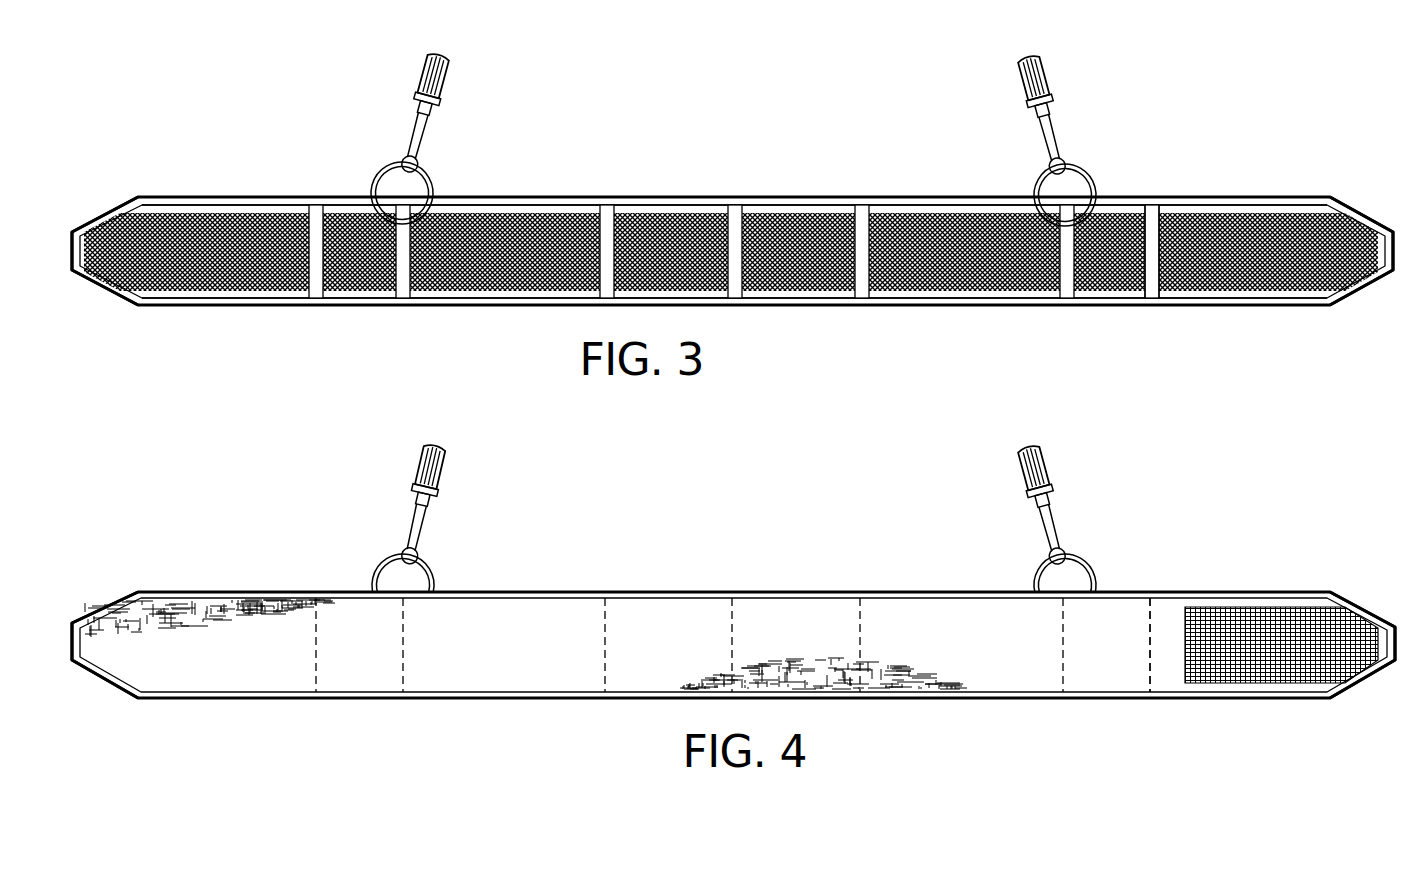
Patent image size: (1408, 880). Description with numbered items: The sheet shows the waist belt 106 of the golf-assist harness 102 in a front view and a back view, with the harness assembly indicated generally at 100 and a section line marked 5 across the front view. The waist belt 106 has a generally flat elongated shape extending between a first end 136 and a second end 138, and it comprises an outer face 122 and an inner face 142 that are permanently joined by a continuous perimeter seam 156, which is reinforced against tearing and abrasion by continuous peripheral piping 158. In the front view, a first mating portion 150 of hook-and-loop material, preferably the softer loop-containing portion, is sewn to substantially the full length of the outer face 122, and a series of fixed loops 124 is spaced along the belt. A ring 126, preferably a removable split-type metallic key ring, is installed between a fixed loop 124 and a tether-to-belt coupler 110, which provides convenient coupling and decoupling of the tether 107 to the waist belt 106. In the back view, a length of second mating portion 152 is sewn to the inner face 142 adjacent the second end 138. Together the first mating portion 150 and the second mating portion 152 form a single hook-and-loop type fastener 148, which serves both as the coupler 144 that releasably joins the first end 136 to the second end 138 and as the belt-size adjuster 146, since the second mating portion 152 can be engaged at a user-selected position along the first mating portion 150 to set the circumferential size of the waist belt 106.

In FIG. 3, the belt assembly 100 is at (300, 132).
In FIG. 4, the belt assembly 100 is at (310, 495).
In FIG. 3, the golf-assist harness 102 is at (212, 137).
In FIG. 4, the golf-assist harness 102 is at (215, 500).
In FIG. 3, the waist belt 106 is at (182, 190).
In FIG. 4, the waist belt 106 is at (250, 592).
In FIG. 3, the tether 107 is at (460, 104).
In FIG. 4, the tether 107 is at (455, 512).
In FIG. 3, the tether-to-belt coupler 110 is at (398, 140).
In FIG. 4, the tether-to-belt coupler 110 is at (412, 532).
In FIG. 3, the outer face 122 is at (485, 298).
In FIG. 3, the fixed loops 124 is at (313, 205).
In FIG. 3, the ring 126 is at (432, 188).
In FIG. 4, the ring 126 is at (430, 588).
In FIG. 3, the first end 136 is at (1386, 218).
In FIG. 4, the first end 136 is at (93, 600).
In FIG. 3, the second end 138 is at (92, 298).
In FIG. 4, the second end 138 is at (1372, 602).
In FIG. 4, the inner face 142 is at (487, 650).
In FIG. 4, the coupler 144 is at (1250, 580).
In FIG. 4, the belt-size adjuster 146 is at (1275, 560).
In FIG. 3, the hook-and-loop type fastener 148 is at (208, 320).
In FIG. 4, the hook-and-loop type fastener 148 is at (1262, 706).
In FIG. 3, the first mating portion 150 is at (540, 212).
In FIG. 4, the second mating portion 152 is at (1352, 672).
In FIG. 3, the perimeter seam 156 is at (1222, 205).
In FIG. 4, the perimeter seam 156 is at (700, 600).
In FIG. 3, the peripheral piping 158 is at (1160, 205).
In FIG. 4, the peripheral piping 158 is at (1212, 595).
In FIG. 3, the section line 5- 5 is at (798, 365).